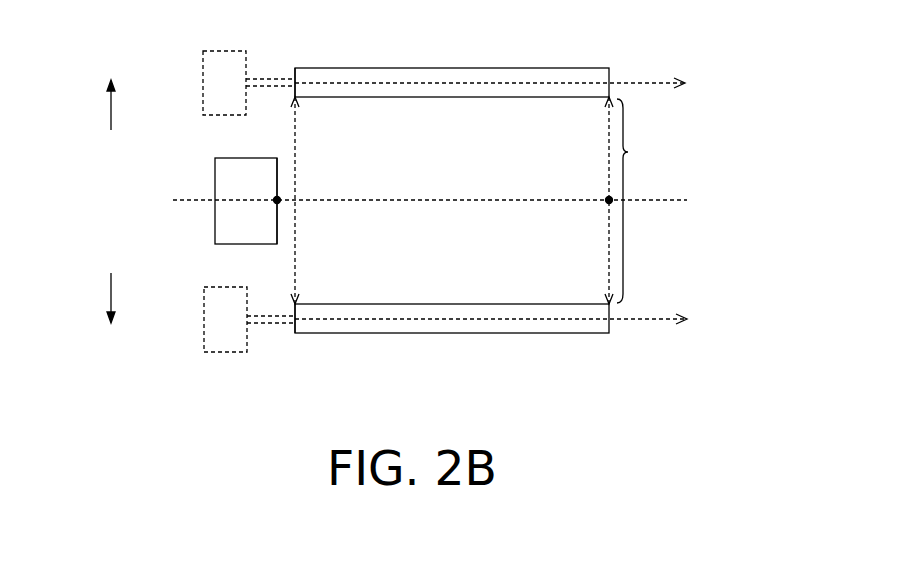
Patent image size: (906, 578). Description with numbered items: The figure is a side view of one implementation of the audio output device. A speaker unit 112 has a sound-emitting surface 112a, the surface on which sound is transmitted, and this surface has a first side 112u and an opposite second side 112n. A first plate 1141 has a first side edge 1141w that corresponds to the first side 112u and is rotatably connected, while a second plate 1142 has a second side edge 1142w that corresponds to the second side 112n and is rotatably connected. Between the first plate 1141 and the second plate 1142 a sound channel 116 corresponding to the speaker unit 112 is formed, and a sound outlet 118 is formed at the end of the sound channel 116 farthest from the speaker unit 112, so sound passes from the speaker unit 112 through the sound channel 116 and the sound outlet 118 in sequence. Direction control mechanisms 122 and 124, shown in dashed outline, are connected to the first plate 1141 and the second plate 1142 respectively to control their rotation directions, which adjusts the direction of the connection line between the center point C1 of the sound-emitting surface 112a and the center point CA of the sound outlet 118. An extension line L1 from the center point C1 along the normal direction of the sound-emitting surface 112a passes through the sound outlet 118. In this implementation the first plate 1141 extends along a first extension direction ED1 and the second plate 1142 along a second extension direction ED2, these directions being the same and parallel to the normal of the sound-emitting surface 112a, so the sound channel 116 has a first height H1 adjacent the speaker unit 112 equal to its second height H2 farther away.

The speaker unit 112 is at (265, 182).
The sound-emitting surface 112a is at (279, 167).
The first side 112u is at (115, 90).
The second side 112n is at (113, 315).
The sound channel 116 is at (494, 132).
The sound outlet 118 is at (644, 201).
The first plate 1141 is at (587, 77).
The second plate 1142 is at (587, 325).
The first side edge 1141w is at (294, 72).
The second side edge 1142w is at (294, 330).
The direction control mechanism 122 is at (220, 80).
The direction control mechanism 124 is at (222, 318).
The center point C1 is at (275, 199).
The center point CA is at (610, 203).
The extension line L1 is at (465, 201).
The first extension direction ED1 is at (515, 83).
The second extension direction ED2 is at (516, 320).
The first height H1 is at (293, 268).
The second height H2 is at (608, 272).